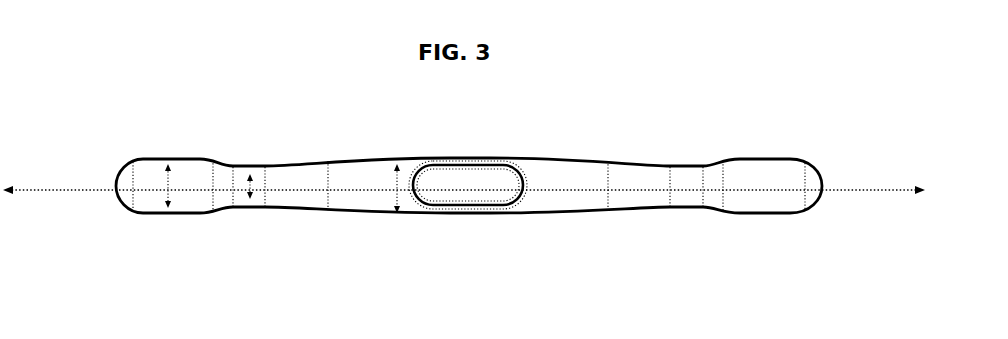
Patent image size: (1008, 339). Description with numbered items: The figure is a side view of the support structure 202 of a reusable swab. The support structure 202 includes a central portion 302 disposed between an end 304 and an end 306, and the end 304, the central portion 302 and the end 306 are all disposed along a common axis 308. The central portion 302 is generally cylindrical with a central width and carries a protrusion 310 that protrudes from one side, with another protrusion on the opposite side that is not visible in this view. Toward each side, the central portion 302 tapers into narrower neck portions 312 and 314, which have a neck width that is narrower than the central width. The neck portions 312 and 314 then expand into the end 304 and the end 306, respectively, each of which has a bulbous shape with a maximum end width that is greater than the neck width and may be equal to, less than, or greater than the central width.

The support structure 202 is at (585, 212).
The central portion 302 is at (430, 217).
The end 304 is at (158, 212).
The end 306 is at (768, 208).
The axis 308 is at (67, 190).
The protrusion 310 is at (495, 200).
The neck portion 312 is at (263, 163).
The neck portion 314 is at (697, 162).